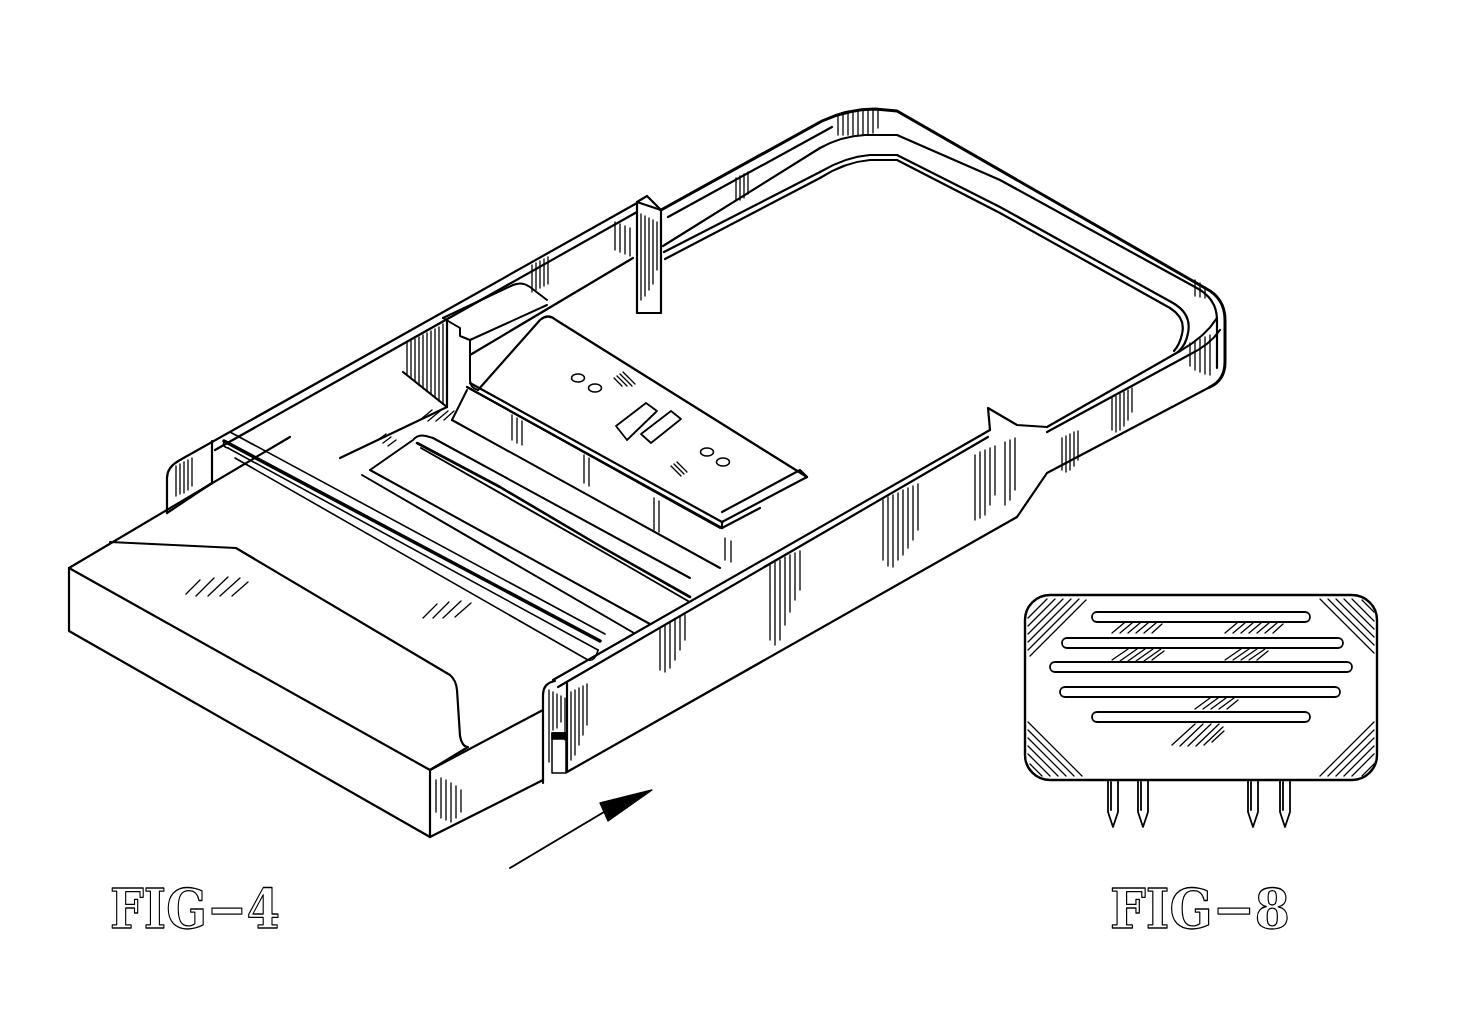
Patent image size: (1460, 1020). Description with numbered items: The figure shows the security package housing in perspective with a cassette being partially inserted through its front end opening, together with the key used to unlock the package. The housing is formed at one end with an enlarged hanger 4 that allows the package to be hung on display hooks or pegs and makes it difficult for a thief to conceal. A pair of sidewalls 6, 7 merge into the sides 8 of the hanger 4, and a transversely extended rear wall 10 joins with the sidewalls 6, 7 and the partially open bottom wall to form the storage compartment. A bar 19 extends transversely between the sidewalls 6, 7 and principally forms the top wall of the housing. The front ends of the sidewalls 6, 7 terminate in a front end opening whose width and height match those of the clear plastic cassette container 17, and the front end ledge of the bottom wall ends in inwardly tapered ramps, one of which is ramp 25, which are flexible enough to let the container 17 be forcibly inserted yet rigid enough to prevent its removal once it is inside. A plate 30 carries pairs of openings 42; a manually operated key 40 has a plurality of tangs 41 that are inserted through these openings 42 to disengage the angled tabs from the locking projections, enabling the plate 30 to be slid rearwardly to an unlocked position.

In FIG. 4, the hanger 4 is at (1086, 207).
In FIG. 4, the sidewall 6 is at (358, 388).
In FIG. 4, the sidewall 7 is at (725, 646).
In FIG. 4, the sides of hanger 8 is at (1163, 395).
In FIG. 4, the rear wall 10 is at (717, 542).
In FIG. 4, the cassette container 17 is at (330, 686).
In FIG. 4, the bar 19 is at (250, 447).
In FIG. 4, the ramp 25 is at (557, 765).
In FIG. 4, the plate 30 is at (693, 427).
In FIG. 4, the openings 42 is at (724, 458).
In FIG. 8, the key 40 is at (1358, 688).
In FIG. 8, the tangs 41 is at (1110, 798).